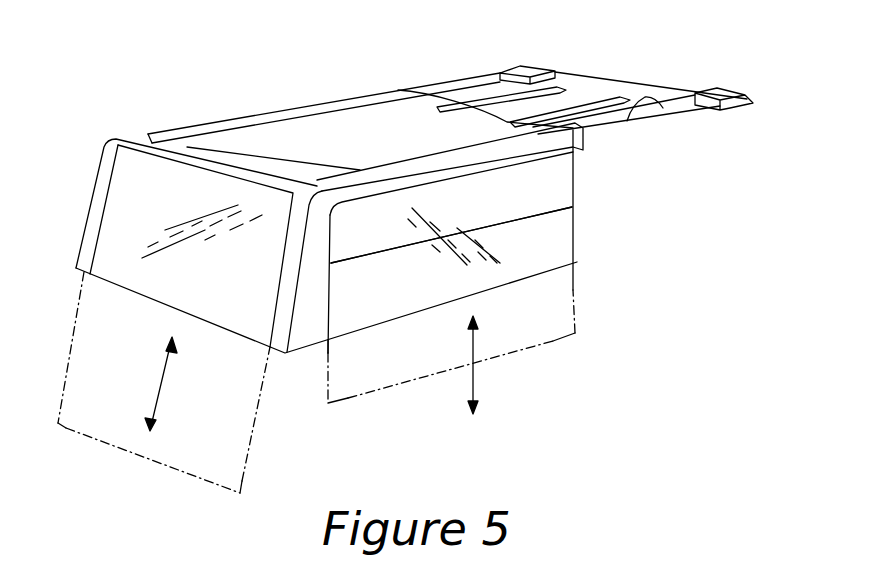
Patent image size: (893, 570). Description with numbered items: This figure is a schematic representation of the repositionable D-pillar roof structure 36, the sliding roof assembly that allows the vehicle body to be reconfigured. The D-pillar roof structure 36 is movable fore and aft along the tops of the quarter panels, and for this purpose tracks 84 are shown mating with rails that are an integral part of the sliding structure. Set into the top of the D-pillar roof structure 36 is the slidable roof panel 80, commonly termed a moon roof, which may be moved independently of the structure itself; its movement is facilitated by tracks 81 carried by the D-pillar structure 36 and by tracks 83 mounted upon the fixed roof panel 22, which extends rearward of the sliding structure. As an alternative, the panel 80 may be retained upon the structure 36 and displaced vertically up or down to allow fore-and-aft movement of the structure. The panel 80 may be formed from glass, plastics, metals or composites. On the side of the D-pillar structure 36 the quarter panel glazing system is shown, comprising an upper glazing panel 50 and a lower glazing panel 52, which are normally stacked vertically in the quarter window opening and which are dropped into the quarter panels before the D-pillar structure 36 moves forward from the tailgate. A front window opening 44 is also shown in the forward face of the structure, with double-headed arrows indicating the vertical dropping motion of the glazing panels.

The fixed roof panel 22 is at (595, 90).
The repositionable D-pillar roof structure 36 is at (100, 167).
The front window panel 44 is at (158, 202).
The upper glazing panel 50 is at (553, 196).
The lower glazing panel 52 is at (401, 299).
The slidable roof panel 80 is at (400, 144).
The tracks 81 is at (327, 177).
The tracks 83 is at (463, 80).
The tracks 84 is at (660, 78).